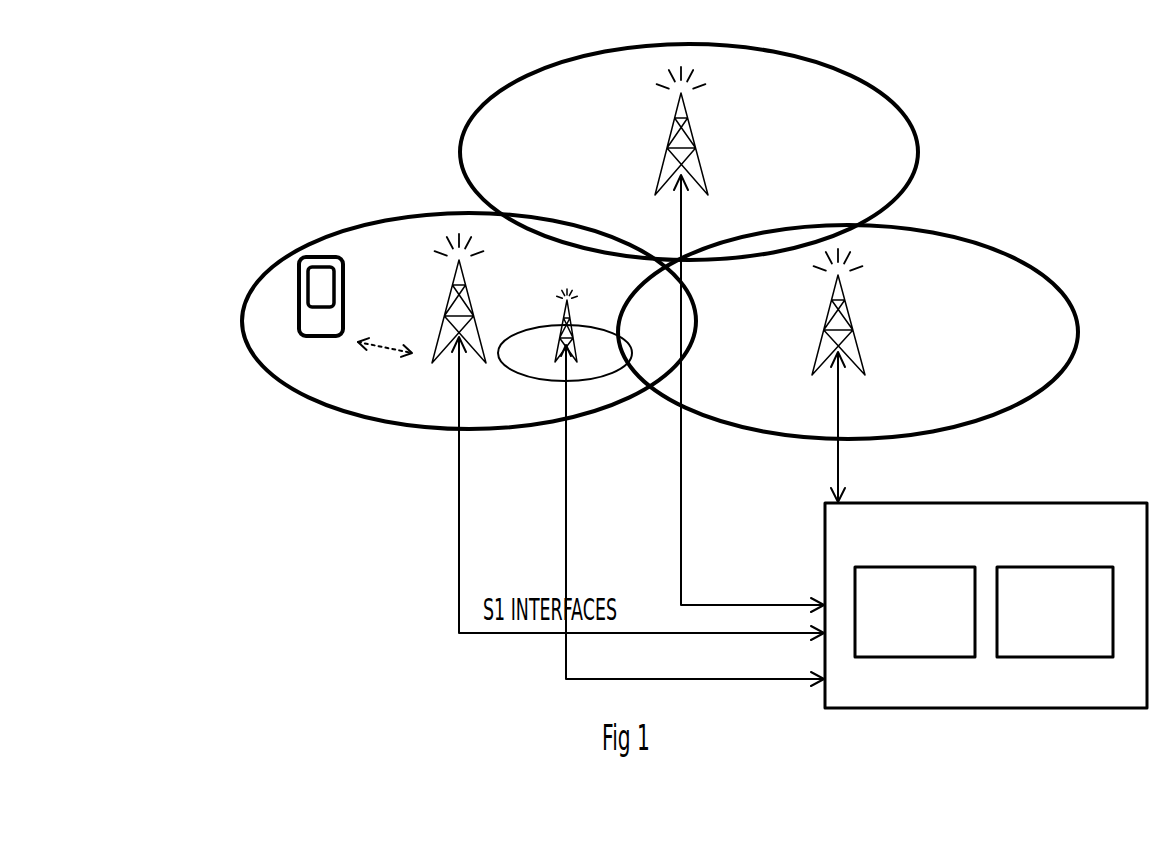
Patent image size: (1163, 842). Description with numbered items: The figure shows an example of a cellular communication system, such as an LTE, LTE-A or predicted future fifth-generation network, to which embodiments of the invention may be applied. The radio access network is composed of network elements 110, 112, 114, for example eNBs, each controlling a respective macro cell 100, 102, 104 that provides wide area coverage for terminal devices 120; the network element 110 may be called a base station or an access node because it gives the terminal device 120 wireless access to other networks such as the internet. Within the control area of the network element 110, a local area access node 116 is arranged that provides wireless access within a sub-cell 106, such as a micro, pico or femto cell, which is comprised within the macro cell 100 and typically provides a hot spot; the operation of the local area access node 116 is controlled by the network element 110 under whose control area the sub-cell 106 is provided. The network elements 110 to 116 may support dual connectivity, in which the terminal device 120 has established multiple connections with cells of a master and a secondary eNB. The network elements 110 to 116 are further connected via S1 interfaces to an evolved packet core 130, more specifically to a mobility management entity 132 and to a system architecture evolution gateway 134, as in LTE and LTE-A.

The cell 100 is at (404, 212).
The cell 102 is at (880, 97).
The cell 104 is at (1037, 280).
The sub-cell 106 is at (515, 330).
The network element 110 is at (453, 292).
The network element 112 is at (672, 130).
The network element 114 is at (830, 305).
The local area access node 116 is at (565, 302).
The terminal device 120 is at (296, 283).
The evolved packet core 130 is at (986, 605).
The mobility management entity 132 is at (915, 612).
The system architecture evolution gateway 134 is at (1055, 612).